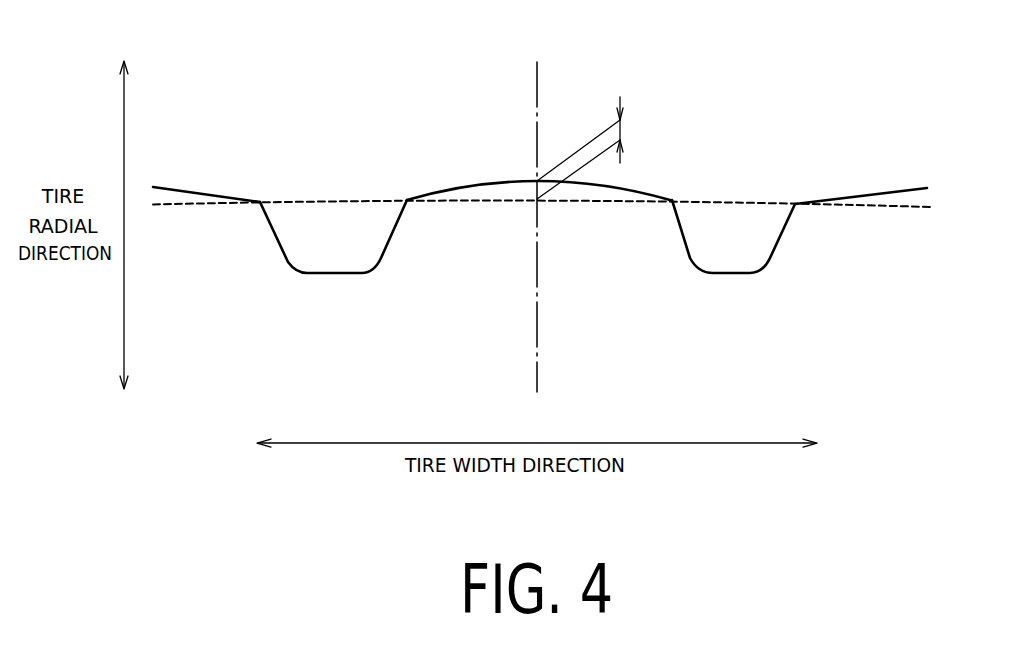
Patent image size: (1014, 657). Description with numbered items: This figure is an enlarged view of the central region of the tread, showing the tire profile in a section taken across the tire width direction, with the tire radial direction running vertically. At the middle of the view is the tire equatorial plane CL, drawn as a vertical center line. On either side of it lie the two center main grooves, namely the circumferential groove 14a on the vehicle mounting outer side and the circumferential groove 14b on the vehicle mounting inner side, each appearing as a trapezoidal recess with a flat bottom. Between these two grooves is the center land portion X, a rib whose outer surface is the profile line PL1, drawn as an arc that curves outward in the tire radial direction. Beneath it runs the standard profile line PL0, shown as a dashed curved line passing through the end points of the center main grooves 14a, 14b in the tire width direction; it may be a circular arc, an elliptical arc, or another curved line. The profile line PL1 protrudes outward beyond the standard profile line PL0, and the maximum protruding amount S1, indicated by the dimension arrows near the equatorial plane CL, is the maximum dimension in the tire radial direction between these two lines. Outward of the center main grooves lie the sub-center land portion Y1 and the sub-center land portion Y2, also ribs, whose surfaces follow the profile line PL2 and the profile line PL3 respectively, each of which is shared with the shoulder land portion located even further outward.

The circumferential groove 14a is at (345, 258).
The circumferential groove 14b is at (727, 258).
The standard profile line PL0 is at (601, 206).
The profile line of the center land portion PL1 is at (488, 184).
The profile line PL2 is at (172, 189).
The profile line PL3 is at (895, 192).
The maximum protruding amount S1 is at (597, 148).
The tire equatorial plane CL is at (538, 207).
The center land portion X is at (496, 245).
The sub-center land portion Y1 is at (202, 255).
The sub-center land portion Y2 is at (880, 258).